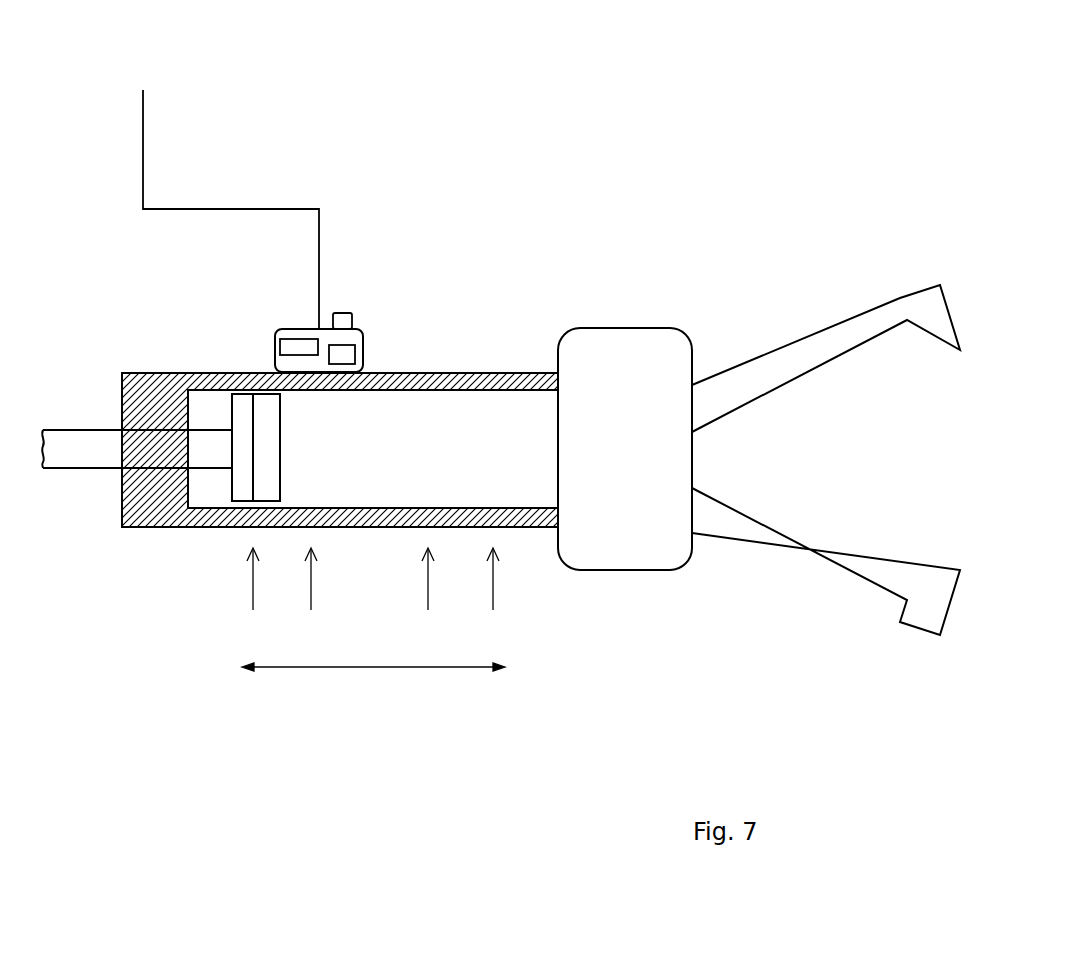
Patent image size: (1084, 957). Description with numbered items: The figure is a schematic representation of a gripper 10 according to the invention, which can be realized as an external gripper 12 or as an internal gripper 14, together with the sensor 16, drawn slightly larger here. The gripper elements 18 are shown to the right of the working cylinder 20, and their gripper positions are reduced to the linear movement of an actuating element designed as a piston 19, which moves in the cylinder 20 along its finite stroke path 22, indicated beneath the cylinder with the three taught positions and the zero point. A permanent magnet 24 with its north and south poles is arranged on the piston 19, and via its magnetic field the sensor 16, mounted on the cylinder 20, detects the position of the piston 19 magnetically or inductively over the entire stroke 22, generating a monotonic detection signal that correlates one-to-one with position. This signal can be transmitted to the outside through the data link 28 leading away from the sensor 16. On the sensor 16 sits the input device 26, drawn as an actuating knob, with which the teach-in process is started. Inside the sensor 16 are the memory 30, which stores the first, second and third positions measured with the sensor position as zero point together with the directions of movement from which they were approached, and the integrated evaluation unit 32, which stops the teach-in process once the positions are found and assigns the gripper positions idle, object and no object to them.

The gripper 10 is at (501, 406).
The external gripper 12 is at (501, 406).
The internal gripper 14 is at (709, 178).
The sensor 16 is at (285, 329).
The gripper elements 18 is at (800, 340).
The piston 19 is at (205, 445).
The cylinder 20 is at (210, 528).
The stroke path 22 is at (338, 667).
The permanent magnet 24 is at (273, 457).
The input device 26 is at (345, 312).
The data link 28 is at (203, 209).
The memory 30 is at (343, 353).
The evaluation unit 32 is at (290, 348).